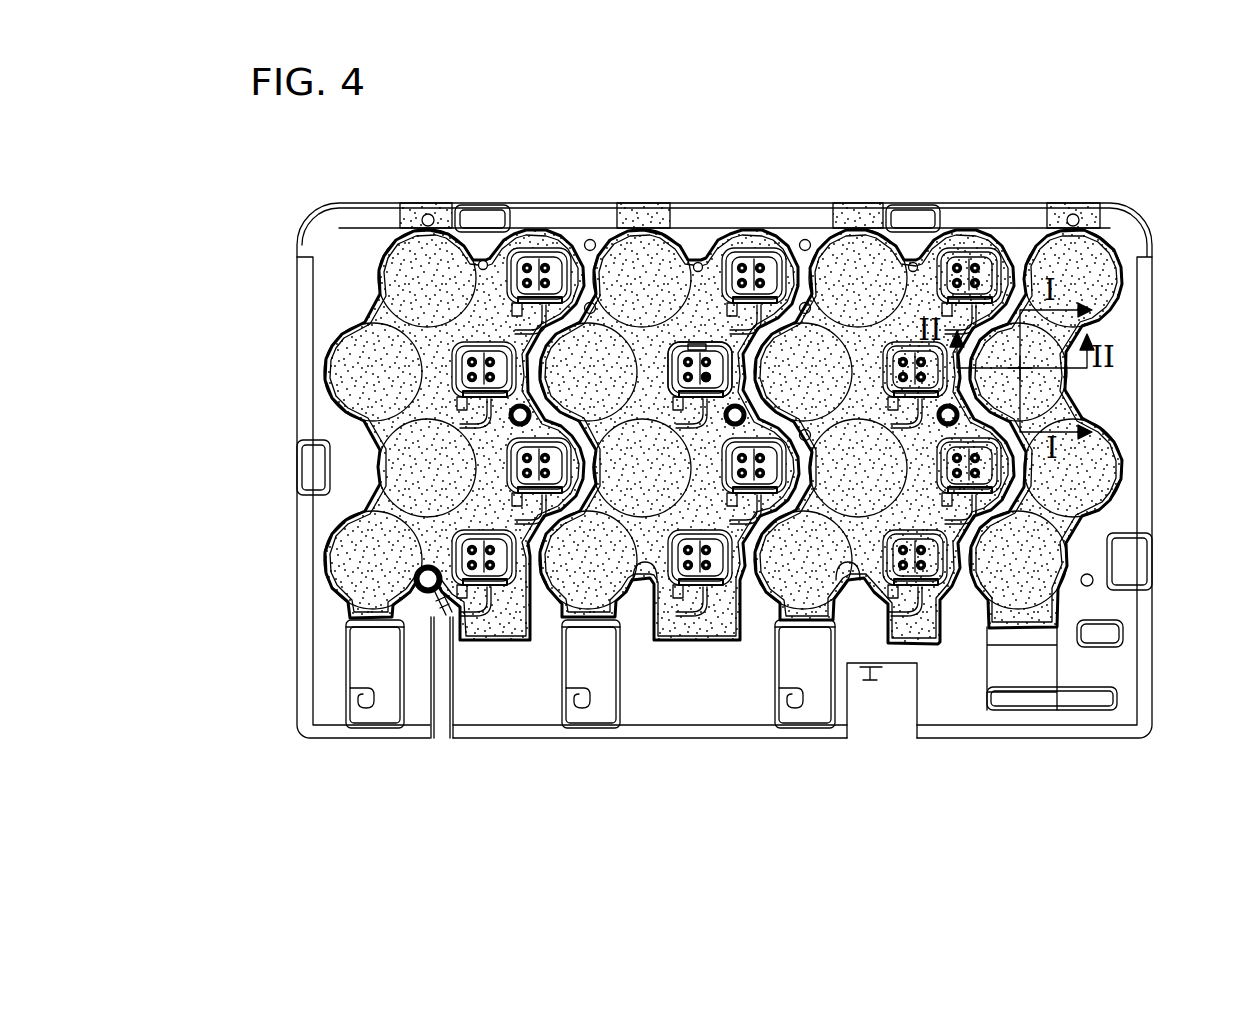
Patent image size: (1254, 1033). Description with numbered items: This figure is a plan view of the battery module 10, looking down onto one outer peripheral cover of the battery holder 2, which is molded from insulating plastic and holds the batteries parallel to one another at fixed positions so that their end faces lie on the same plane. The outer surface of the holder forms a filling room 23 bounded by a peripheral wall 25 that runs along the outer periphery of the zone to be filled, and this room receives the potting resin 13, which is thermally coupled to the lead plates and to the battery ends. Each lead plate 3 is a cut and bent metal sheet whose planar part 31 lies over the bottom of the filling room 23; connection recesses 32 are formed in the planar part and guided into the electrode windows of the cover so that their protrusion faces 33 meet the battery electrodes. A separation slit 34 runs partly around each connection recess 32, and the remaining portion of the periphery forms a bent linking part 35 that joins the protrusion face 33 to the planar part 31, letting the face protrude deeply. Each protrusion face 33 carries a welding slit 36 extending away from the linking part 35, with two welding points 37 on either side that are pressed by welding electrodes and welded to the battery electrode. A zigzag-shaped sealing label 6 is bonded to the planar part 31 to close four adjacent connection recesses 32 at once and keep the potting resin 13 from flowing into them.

The battery module 10 is at (1103, 126).
The battery holder 2 is at (541, 222).
The lead plate 3 is at (858, 100).
The sealing label 6 is at (577, 577).
The potting resin 13 is at (582, 396).
The filling room 23 is at (597, 228).
The peripheral wall 25 is at (561, 225).
The planar part 31 is at (668, 370).
The connection recess 32 is at (708, 375).
The protrusion face 33 is at (786, 262).
The separation slit 34 is at (505, 213).
The linking part 35 is at (643, 572).
The welding slit 36 is at (727, 348).
The welding point 37 is at (698, 352).